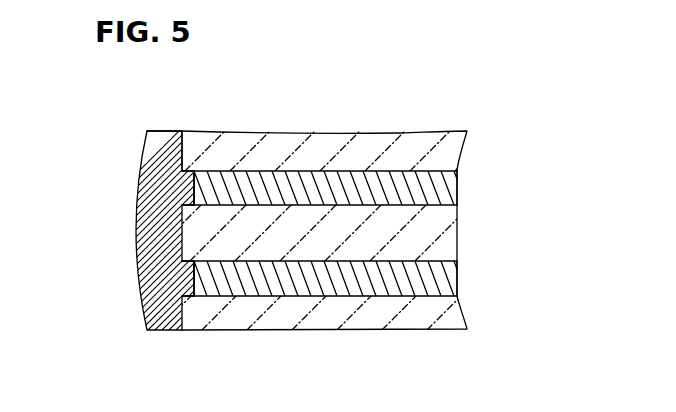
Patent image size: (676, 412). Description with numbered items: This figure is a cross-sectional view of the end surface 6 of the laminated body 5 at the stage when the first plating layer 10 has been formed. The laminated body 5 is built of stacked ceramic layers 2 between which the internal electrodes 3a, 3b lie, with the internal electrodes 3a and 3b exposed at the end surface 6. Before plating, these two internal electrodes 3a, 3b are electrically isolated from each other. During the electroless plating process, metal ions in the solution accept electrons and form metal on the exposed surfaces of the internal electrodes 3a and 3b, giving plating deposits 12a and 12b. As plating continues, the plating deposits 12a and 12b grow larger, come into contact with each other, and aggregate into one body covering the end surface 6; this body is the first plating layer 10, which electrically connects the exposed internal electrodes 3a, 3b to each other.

The laminated body 5 is at (414, 132).
The ceramic layers 2 is at (387, 251).
The internal electrode 3a is at (452, 187).
The internal electrode 3b is at (450, 277).
The first plating layer 10 is at (143, 309).
The end surface 6 is at (173, 147).
The plating deposit 12a is at (173, 188).
The plating deposit 12b is at (167, 275).